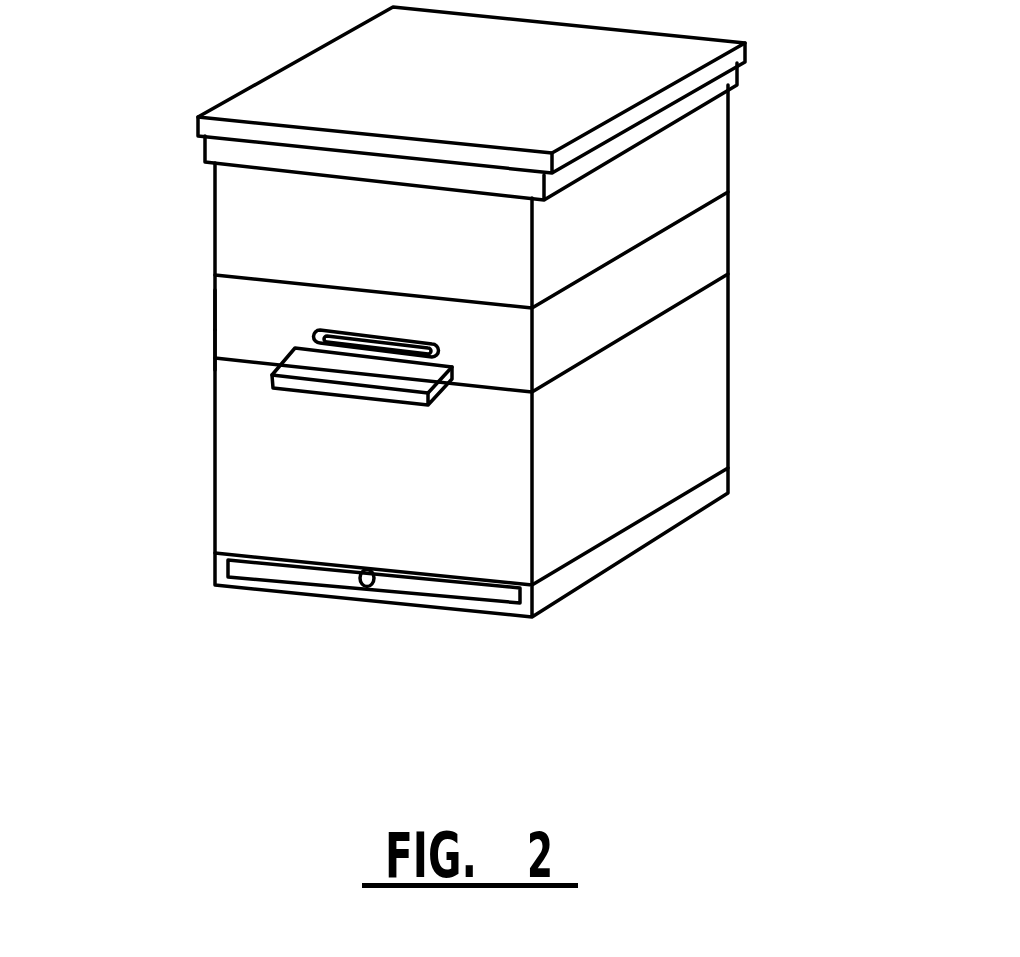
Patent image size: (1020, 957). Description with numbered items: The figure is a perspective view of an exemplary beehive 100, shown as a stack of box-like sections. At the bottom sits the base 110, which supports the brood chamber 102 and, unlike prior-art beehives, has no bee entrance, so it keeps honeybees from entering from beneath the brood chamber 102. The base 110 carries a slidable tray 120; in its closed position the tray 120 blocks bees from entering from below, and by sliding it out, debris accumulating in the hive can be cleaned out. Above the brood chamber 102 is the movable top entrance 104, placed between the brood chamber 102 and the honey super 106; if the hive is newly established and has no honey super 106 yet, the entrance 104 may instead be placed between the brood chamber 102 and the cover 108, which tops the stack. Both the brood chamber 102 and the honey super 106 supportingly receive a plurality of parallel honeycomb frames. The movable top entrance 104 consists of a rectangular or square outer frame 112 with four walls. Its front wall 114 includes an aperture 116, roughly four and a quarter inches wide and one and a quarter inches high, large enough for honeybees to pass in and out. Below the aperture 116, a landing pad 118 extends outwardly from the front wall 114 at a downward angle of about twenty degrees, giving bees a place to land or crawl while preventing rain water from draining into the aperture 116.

The beehive 100 is at (805, 106).
The brood chamber 102 is at (702, 375).
The movable top entrance 104 is at (718, 238).
The honey super 106 is at (707, 168).
The cover 108 is at (745, 45).
The base 110 is at (718, 487).
The outer frame 112 is at (215, 311).
The front wall 114 is at (235, 342).
The aperture 116 is at (437, 347).
The landing pad 118 is at (355, 396).
The slidable tray 120 is at (490, 592).